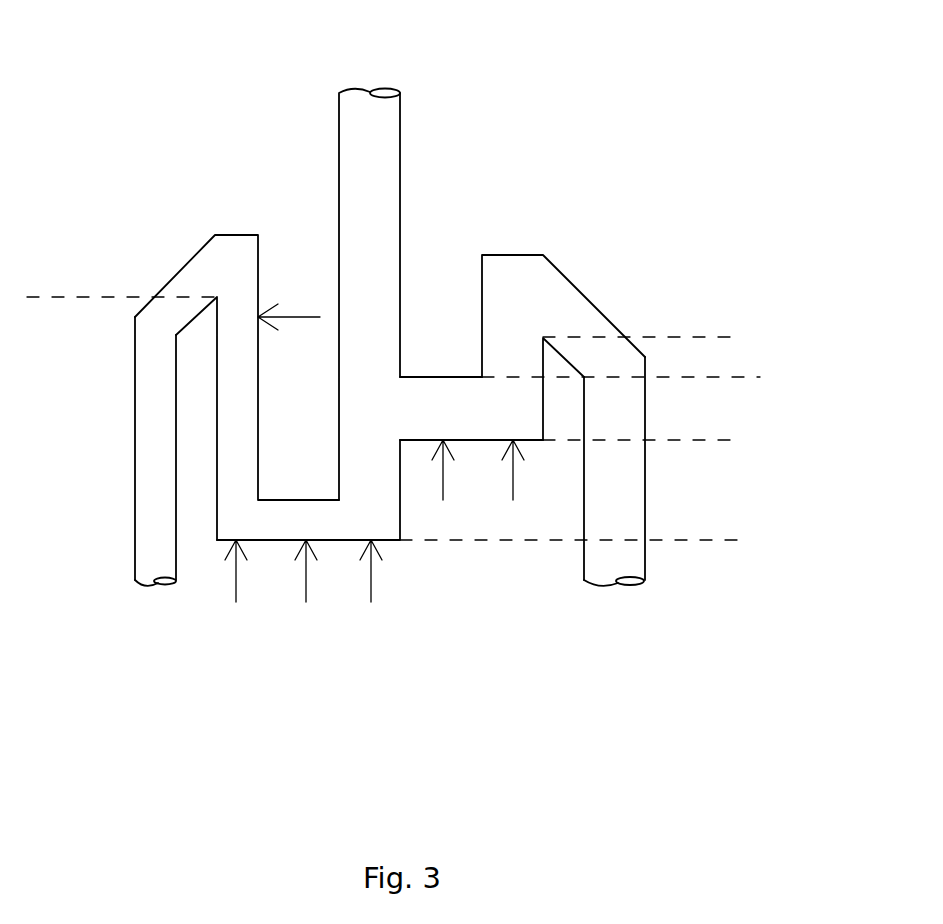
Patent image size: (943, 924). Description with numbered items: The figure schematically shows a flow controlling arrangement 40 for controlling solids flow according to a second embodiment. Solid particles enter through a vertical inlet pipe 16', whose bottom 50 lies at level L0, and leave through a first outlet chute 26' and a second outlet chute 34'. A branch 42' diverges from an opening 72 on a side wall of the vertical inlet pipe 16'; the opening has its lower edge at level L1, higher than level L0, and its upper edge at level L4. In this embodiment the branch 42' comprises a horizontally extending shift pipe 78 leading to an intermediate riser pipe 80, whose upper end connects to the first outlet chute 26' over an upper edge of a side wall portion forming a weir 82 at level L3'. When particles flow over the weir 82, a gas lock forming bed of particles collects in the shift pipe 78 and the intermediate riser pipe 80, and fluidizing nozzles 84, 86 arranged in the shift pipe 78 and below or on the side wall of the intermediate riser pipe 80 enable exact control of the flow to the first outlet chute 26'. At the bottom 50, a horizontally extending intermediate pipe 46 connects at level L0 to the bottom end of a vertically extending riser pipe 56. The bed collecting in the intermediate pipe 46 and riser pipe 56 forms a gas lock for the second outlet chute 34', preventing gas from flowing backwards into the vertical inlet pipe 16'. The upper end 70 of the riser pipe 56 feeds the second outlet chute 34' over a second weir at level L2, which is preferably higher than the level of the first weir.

The flow controlling arrangement 40 is at (153, 86).
The vertical inlet pipe 16' is at (428, 288).
The upper end of the vertically extending riser pipe 70 is at (258, 265).
The second outlet chute 34' is at (93, 451).
The vertically extending riser pipe 56 is at (215, 467).
The bottom of the vertical inlet pipe 50 is at (390, 540).
The opening 72 is at (398, 405).
The intermediate riser pipe 80 is at (482, 333).
The weir 82 is at (543, 337).
The first outlet chute 26' is at (712, 471).
The horizontally extending shift pipe 78 is at (472, 440).
The branch 42' is at (546, 548).
The horizontally extending intermediate pipe 46 is at (278, 540).
The fluidizing nozzle 84 is at (437, 488).
The fluidizing nozzle 86 is at (510, 478).
The level of the bottom of the vertical inlet pipe L0 is at (575, 523).
The level of the lower edge of the opening L1 is at (642, 419).
The level of the second weir L2 is at (121, 277).
The level of the weir L3' is at (646, 319).
The level of the upper edge of the opening L4 is at (622, 359).